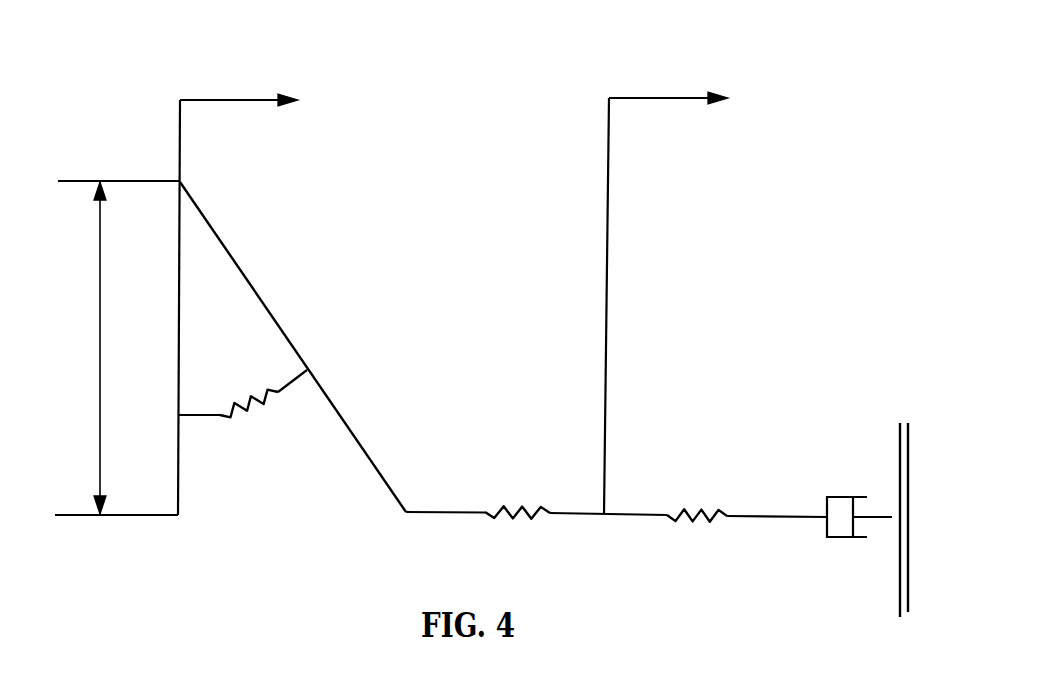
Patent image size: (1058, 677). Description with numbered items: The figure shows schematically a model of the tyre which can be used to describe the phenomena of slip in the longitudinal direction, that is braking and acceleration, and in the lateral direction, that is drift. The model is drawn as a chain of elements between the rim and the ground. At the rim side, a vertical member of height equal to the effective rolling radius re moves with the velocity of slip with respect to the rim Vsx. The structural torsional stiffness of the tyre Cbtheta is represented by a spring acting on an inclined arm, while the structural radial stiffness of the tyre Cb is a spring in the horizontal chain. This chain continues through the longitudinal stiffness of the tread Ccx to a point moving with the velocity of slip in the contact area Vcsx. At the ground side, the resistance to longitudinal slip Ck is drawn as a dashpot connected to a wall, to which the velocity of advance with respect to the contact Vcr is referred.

The effective rolling radius re is at (76, 348).
The velocity of slip with respect to the rim Vsx is at (239, 70).
The velocity of slip in the contact area Vcsx is at (664, 272).
The structural torsional stiffness of the tyre Cbtheta is at (244, 431).
The structural radial stiffness of the tyre Cb is at (517, 464).
The longitudinal stiffness of the tread Ccx is at (688, 466).
The resistance to longitudinal slip Ck is at (880, 398).
The velocity of advance with respect to the contact Vcr is at (855, 512).